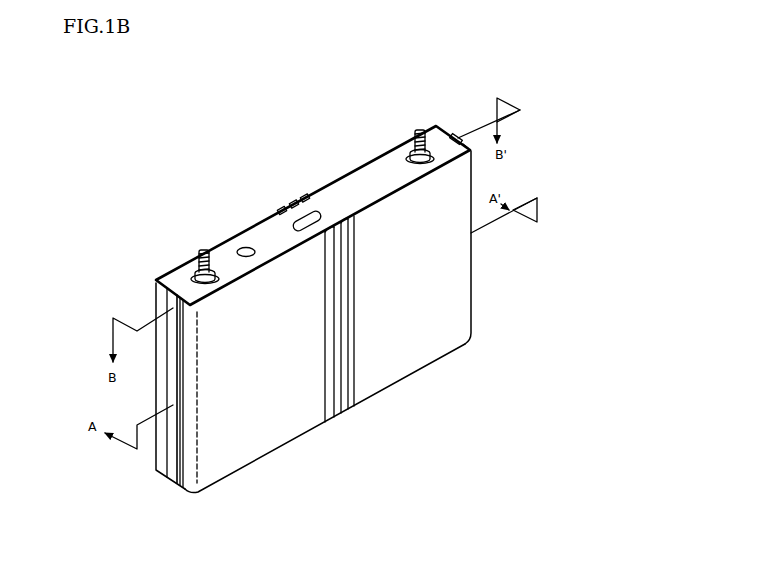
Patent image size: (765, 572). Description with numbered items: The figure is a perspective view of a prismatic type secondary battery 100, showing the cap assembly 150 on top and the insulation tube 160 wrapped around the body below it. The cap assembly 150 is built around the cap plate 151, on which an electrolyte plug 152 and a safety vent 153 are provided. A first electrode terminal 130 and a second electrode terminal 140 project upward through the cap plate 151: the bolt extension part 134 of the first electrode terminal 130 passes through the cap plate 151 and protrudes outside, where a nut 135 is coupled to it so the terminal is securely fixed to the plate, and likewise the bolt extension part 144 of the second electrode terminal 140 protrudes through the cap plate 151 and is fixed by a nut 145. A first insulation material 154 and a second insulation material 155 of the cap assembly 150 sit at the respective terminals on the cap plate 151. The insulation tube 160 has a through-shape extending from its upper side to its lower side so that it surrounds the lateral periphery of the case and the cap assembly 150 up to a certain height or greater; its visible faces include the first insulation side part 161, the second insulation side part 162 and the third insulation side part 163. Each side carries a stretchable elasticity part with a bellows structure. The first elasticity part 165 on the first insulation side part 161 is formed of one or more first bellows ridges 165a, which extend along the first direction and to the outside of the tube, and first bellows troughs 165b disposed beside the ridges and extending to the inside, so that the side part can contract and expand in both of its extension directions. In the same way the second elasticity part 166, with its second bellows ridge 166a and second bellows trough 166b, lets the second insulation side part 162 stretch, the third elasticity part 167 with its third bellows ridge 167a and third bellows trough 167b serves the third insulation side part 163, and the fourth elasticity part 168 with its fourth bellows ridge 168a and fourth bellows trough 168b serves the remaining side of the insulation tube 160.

The secondary battery 100 is at (141, 124).
The first electrode terminal 130 is at (199, 250).
The bolt extension part 134 is at (205, 250).
The nut 135 is at (195, 270).
The second electrode terminal 140 is at (415, 130).
The bolt extension part 144 is at (419, 130).
The nut 145 is at (426, 137).
The cap assembly 150 is at (339, 176).
The cap plate 151 is at (375, 168).
The electrolyte plug 152 is at (243, 247).
The safety vent 153 is at (296, 226).
The first insulation material 154 is at (191, 279).
The second insulation material 155 is at (405, 147).
The insulation tube 160 is at (150, 304).
The first insulation side part 161 is at (157, 467).
The second insulation side part 162 is at (472, 266).
The third insulation side part 163 is at (262, 457).
The first elasticity part 165 is at (160, 483).
The first bellows ridge 165a is at (168, 486).
The first bellows trough 165b is at (172, 488).
The second elasticity part 166 is at (453, 128).
The second bellows ridge 166a is at (458, 133).
The second bellows trough 166b is at (472, 150).
The third elasticity part 167 is at (358, 408).
The third bellows ridge 167a is at (331, 422).
The third bellows trough 167b is at (342, 416).
The fourth elasticity part 168 is at (301, 191).
The fourth bellows ridge 168a is at (285, 205).
The fourth bellows trough 168b is at (293, 199).